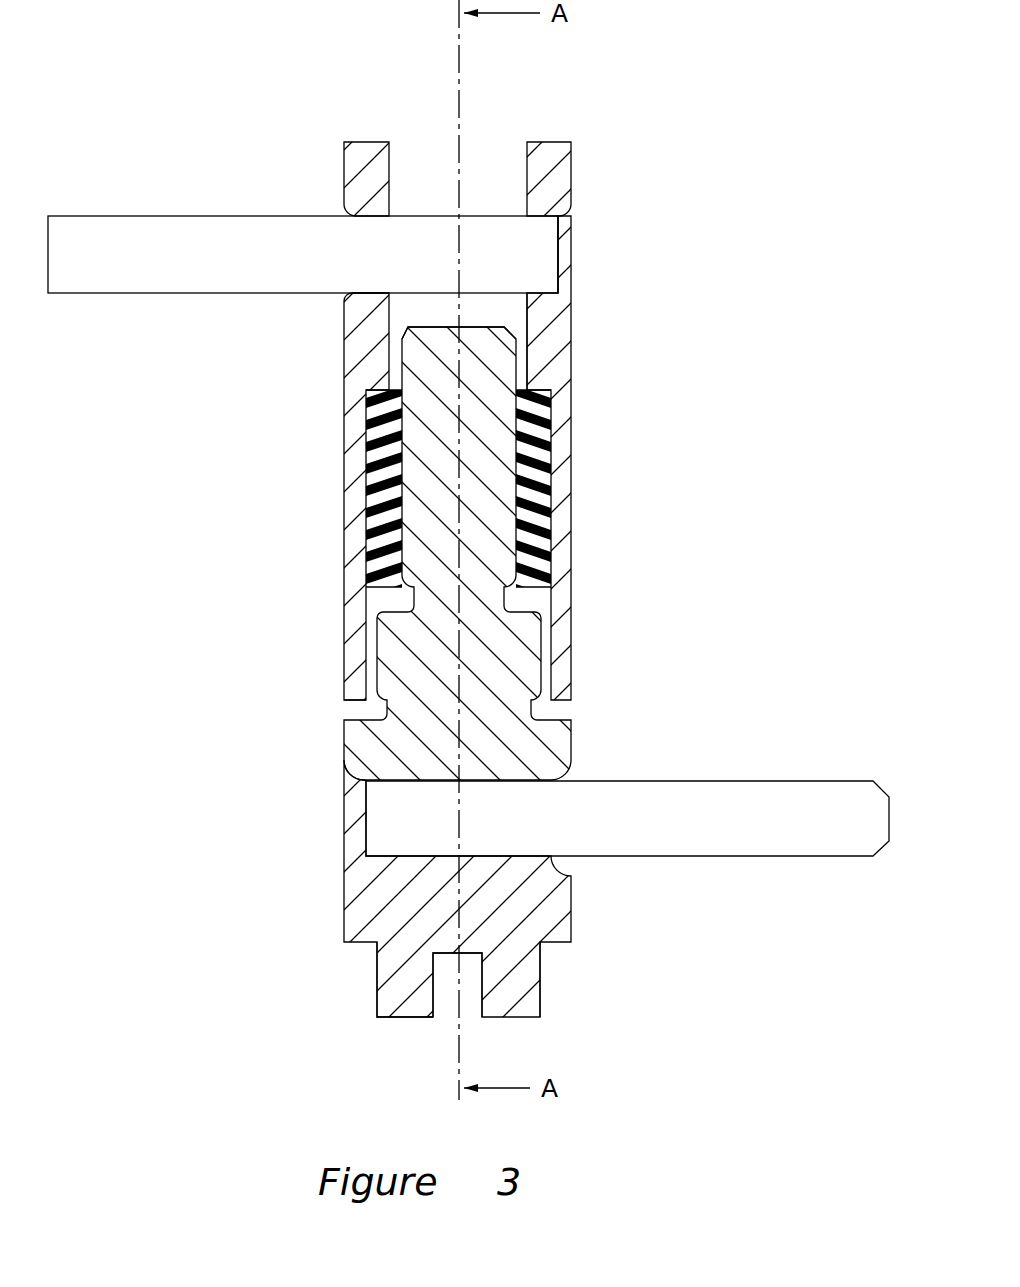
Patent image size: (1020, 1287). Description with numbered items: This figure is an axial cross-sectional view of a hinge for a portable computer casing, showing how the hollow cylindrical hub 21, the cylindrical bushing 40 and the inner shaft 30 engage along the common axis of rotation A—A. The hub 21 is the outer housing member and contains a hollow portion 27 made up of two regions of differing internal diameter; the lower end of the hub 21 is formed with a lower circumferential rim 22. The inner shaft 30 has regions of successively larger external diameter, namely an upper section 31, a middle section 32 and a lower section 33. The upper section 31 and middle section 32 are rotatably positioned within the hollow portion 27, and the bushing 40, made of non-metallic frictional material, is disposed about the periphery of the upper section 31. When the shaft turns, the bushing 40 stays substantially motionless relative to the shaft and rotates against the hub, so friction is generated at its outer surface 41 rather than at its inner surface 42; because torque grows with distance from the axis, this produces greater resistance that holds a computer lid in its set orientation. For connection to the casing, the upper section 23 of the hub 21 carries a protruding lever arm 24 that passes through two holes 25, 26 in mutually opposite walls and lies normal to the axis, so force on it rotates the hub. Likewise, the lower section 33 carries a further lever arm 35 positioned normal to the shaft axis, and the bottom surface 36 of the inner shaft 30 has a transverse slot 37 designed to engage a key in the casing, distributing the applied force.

The hollow cylindrical hub 21 is at (344, 480).
The lower circumferential rim 22 is at (350, 702).
The upper section of the hub 23 is at (558, 176).
The lever arm 24 is at (218, 295).
The hole 25 is at (345, 297).
The hole 26 is at (556, 218).
The hollow portion 27 is at (507, 312).
The inner shaft 30 is at (344, 920).
The upper section 31 is at (490, 372).
The middle section 32 is at (503, 687).
The lower section 33 is at (500, 928).
The further lever arm 35 is at (697, 860).
The bottom surface 36 is at (392, 1018).
The transverse slot 37 is at (459, 1040).
The cylindrical bushing 40 is at (535, 505).
The outer surface of the bushing 41 is at (546, 458).
The inner surface of the bushing 42 is at (492, 556).